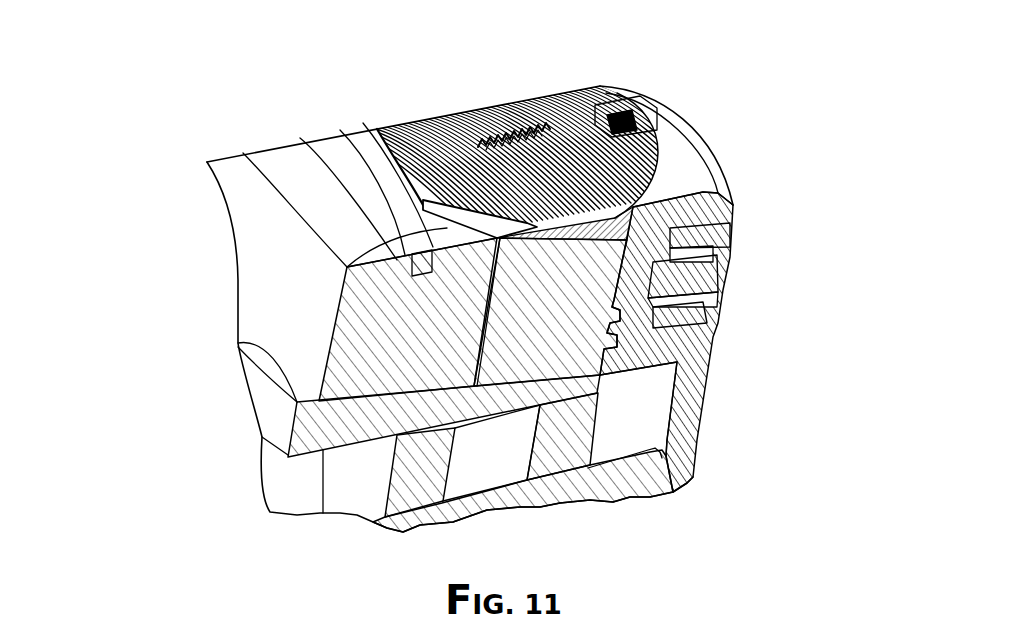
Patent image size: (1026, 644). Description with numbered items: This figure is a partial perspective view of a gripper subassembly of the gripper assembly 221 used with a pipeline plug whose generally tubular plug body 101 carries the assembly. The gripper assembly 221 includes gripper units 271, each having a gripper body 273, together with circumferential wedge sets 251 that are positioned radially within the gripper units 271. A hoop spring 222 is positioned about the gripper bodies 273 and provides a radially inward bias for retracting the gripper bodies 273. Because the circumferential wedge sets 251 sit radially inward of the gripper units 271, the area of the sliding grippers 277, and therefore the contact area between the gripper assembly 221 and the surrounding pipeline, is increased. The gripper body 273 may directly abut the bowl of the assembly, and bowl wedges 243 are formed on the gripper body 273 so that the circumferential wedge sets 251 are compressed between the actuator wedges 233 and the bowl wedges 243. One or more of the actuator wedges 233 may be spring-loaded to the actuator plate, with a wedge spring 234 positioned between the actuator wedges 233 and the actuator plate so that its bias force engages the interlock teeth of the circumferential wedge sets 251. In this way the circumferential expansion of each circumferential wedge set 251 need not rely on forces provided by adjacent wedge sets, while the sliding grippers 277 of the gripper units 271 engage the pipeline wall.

The plug body 101 is at (567, 440).
The gripper assembly 221 is at (153, 210).
The hoop spring 222 is at (308, 146).
The actuator wedges 233 is at (677, 178).
The wedge spring 234 is at (695, 264).
The bowl wedges 243 is at (447, 230).
The circumferential wedge sets 251 is at (593, 387).
The gripper units 271 is at (397, 105).
The gripper body 273 is at (600, 222).
The sliding grippers 277 is at (613, 157).